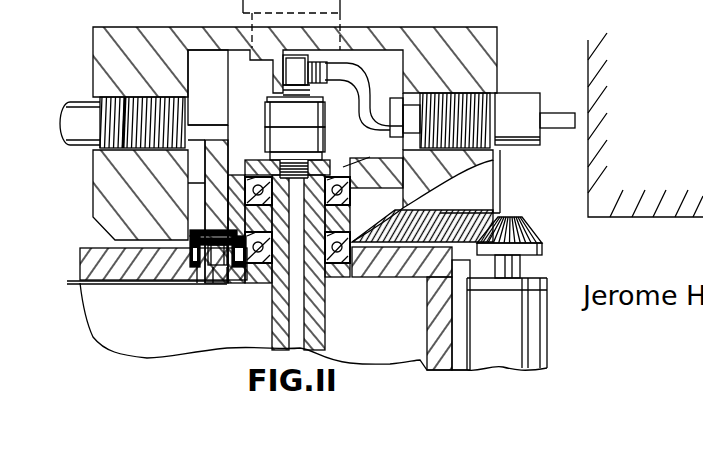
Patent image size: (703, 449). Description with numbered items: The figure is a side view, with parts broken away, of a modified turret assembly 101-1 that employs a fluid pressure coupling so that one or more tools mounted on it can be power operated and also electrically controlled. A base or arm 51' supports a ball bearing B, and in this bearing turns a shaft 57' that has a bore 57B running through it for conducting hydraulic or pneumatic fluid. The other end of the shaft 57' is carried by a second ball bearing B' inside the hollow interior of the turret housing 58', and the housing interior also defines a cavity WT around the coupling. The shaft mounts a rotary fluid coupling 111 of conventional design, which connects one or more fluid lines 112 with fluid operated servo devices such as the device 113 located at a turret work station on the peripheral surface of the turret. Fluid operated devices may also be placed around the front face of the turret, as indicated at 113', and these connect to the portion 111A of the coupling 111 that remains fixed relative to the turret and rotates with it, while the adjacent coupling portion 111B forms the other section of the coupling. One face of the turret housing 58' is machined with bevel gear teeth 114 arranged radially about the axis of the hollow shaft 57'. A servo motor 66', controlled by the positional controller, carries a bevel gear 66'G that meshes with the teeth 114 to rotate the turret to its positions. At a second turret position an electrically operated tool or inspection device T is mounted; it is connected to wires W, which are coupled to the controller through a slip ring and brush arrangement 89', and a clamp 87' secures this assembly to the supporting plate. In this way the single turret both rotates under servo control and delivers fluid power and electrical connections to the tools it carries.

The tool unit 101-1 is at (113, 6).
The turret housing 58' is at (321, 155).
The weight cavity WT is at (210, 127).
The electrically operated tool or inspection device T is at (73, 150).
The fluid operated servo device 113 is at (482, 120).
The rotary fluid coupling 111 is at (273, 115).
The portion of the fluid coupling 111A is at (295, 112).
The valve section B 111B is at (295, 143).
The fluid line 112 is at (500, 27).
The fluid operated device 113' is at (324, 25).
The second ball bearing B' is at (324, 185).
The ball bearing B is at (312, 267).
The shaft 57' is at (349, 263).
The bore 57B is at (277, 293).
The bevel gear teeth 114 is at (500, 208).
The bevel gear 66'G is at (548, 247).
The servo motor 66' is at (507, 324).
The wires W is at (77, 285).
The clamp 87' is at (190, 311).
The slip ring and brush arrangement 89' is at (204, 288).
The base or arm 51' is at (313, 337).